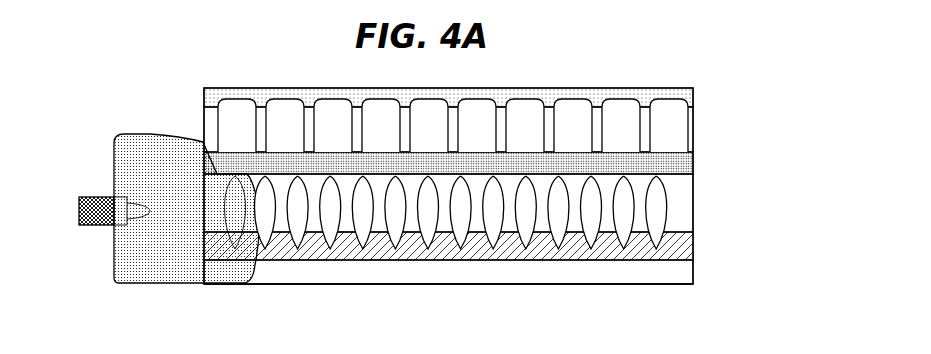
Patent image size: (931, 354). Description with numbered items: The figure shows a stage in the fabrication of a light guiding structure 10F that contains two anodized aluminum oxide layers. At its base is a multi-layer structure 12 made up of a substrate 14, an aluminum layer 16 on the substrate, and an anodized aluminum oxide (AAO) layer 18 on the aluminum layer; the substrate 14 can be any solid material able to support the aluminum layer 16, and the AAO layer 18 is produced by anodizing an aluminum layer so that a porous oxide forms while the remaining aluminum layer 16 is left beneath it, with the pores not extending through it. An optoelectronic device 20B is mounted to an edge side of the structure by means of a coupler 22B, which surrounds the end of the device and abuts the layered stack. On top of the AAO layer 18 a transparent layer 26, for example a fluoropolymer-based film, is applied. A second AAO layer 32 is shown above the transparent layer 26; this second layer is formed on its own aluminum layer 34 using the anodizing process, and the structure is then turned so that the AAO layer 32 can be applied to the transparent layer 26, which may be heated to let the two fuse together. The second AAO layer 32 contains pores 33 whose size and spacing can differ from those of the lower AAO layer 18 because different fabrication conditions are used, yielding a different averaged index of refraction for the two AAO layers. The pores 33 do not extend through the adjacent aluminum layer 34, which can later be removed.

The light guiding structure 10F is at (723, 75).
The multi-layer structure 12 is at (304, 295).
The substrate 14 is at (702, 274).
The aluminum layer 16 is at (706, 245).
The anodized aluminum oxide (AAO) layer 18 is at (704, 200).
The optoelectronic device 20B is at (93, 203).
The coupler 22B is at (144, 148).
The transparent layer 26 is at (693, 165).
The second AAO layer 32 is at (493, 101).
The pores 33 is at (571, 112).
The aluminum layer 34 is at (704, 98).